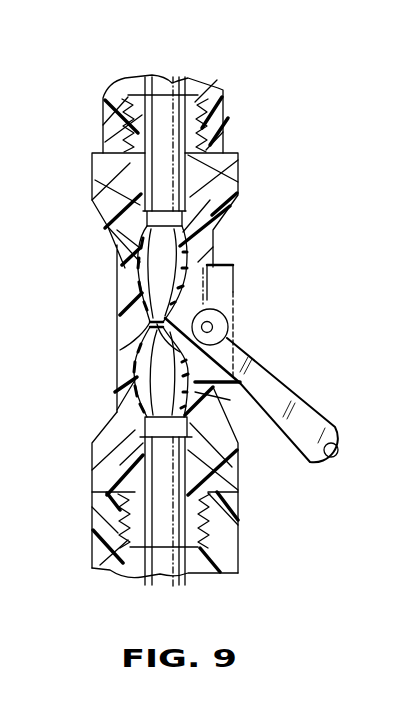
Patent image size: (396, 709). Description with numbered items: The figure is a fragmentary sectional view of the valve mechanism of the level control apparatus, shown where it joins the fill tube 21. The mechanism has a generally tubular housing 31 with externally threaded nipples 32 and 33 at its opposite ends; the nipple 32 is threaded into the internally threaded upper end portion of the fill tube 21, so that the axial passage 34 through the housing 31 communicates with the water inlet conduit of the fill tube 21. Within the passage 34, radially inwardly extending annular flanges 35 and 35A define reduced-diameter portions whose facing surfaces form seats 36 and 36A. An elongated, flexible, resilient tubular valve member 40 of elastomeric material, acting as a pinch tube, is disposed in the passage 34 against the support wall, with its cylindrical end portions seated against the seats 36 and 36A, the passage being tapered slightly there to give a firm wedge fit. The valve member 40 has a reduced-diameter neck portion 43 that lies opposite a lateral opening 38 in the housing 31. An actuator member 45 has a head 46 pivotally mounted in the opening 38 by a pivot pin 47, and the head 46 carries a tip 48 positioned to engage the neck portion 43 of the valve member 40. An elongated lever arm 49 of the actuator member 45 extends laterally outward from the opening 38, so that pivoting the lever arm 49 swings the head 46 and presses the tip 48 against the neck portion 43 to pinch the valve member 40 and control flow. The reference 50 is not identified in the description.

The fill tube 21 is at (233, 547).
The housing 31 is at (102, 438).
The nipple 32 is at (160, 518).
The nipple 33 is at (196, 98).
The axial passage 34 is at (153, 173).
The annular flange 35 is at (107, 218).
The annular flange 35A is at (224, 427).
The seat 36 is at (196, 234).
The seat 36A is at (130, 377).
The lateral opening 38 is at (231, 279).
The tubular valve member 40 is at (163, 253).
The neck portion 43 is at (140, 317).
The actuator member 45 is at (277, 375).
The head 46 is at (238, 344).
The pivot pin 47 is at (215, 314).
The tip 48 is at (148, 325).
The lever arm 49 is at (326, 413).
The fitting assembly 50 is at (231, 144).